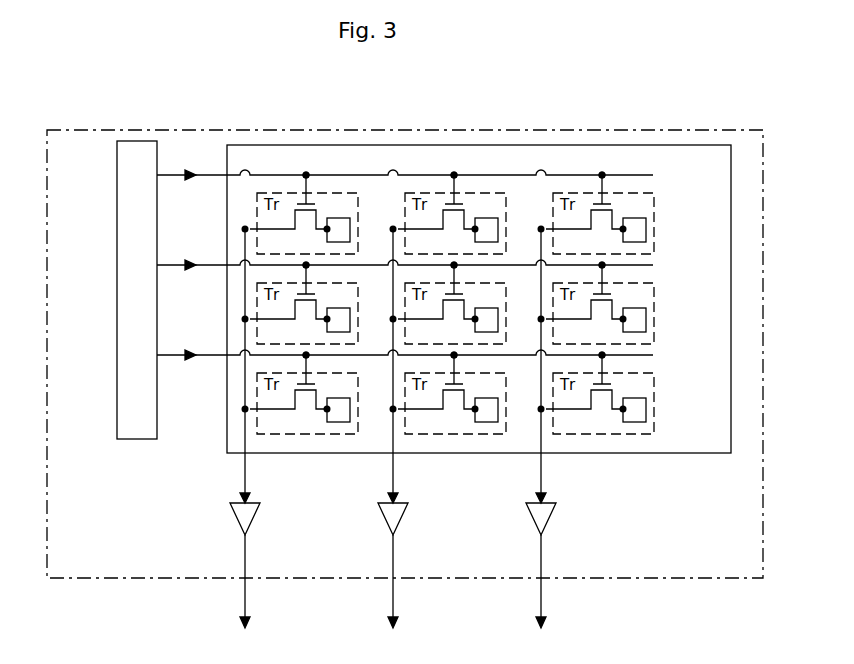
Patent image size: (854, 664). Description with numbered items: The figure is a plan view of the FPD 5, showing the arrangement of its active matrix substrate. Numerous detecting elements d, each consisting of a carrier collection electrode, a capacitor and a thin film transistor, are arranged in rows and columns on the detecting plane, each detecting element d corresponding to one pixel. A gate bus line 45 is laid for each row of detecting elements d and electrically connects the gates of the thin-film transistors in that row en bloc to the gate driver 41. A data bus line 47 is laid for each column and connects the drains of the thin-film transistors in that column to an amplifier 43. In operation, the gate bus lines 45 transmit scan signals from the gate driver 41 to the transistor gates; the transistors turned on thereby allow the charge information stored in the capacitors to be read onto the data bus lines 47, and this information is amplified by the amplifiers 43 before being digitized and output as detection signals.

The FPD 5 is at (46, 210).
The gate driver 41 is at (117, 265).
The gate bus line 45 is at (213, 178).
The data bus line 47 is at (245, 477).
The amplifier 43 is at (238, 520).
The detecting element d is at (457, 303).